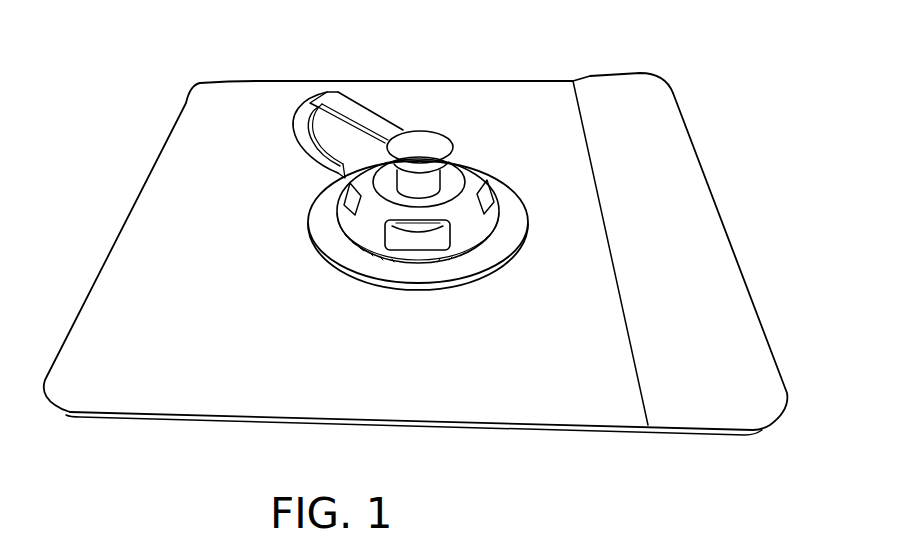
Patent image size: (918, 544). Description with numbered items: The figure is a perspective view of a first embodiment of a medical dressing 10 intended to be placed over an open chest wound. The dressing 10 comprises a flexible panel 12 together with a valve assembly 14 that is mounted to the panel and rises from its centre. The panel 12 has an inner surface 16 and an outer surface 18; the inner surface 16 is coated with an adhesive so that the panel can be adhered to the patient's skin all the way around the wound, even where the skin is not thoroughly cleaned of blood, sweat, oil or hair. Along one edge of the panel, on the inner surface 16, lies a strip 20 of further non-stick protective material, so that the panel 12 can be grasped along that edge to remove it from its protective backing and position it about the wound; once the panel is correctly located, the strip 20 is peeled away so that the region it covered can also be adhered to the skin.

The medical dressing 10 is at (113, 105).
The flexible panel 12 is at (508, 83).
The valve assembly 14 is at (460, 230).
The inner surface 16 is at (490, 428).
The outer surface 18 is at (188, 387).
The strip 20 is at (750, 433).